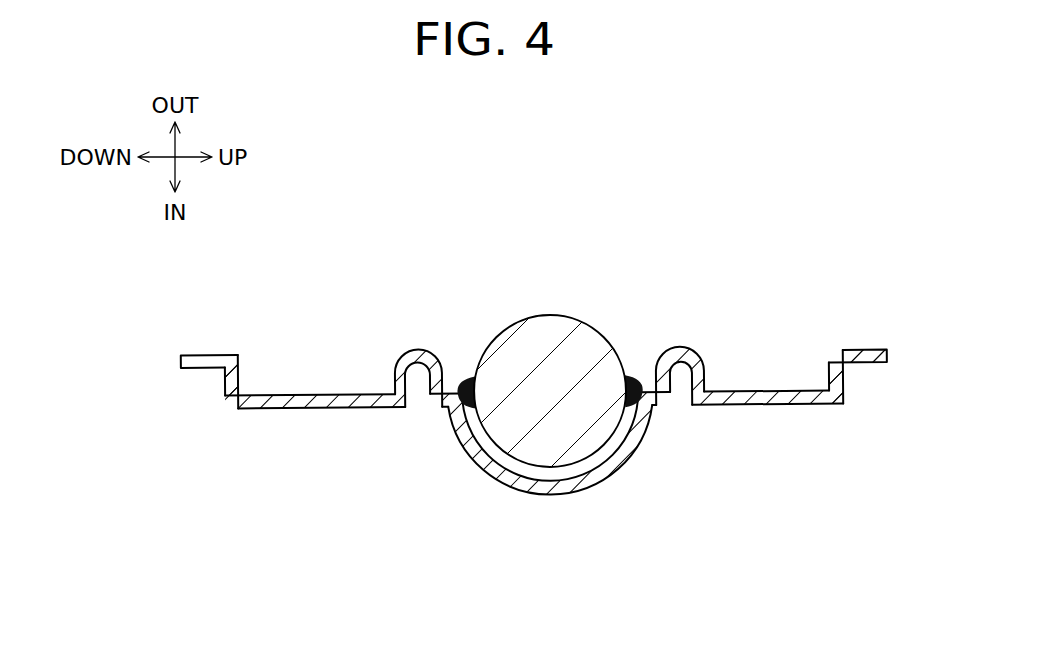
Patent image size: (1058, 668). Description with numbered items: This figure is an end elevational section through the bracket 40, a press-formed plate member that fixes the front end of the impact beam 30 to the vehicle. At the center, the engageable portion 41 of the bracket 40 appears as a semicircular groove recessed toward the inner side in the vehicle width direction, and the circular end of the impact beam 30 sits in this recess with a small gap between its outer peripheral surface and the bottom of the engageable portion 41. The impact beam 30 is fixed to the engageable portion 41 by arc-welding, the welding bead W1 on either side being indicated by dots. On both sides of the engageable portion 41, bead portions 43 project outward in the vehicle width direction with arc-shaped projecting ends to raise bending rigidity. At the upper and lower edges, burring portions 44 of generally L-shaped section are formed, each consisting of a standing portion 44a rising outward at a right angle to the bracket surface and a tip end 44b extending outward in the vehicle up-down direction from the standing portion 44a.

The impact beam 30 is at (555, 320).
The bracket 40 is at (790, 522).
The engageable portion 41 is at (546, 480).
The bead portion 43 is at (677, 352).
The burring portion 44 is at (293, 297).
The standing portion 44a is at (829, 366).
The tip end 44b is at (867, 349).
The welding bead W1 is at (638, 377).